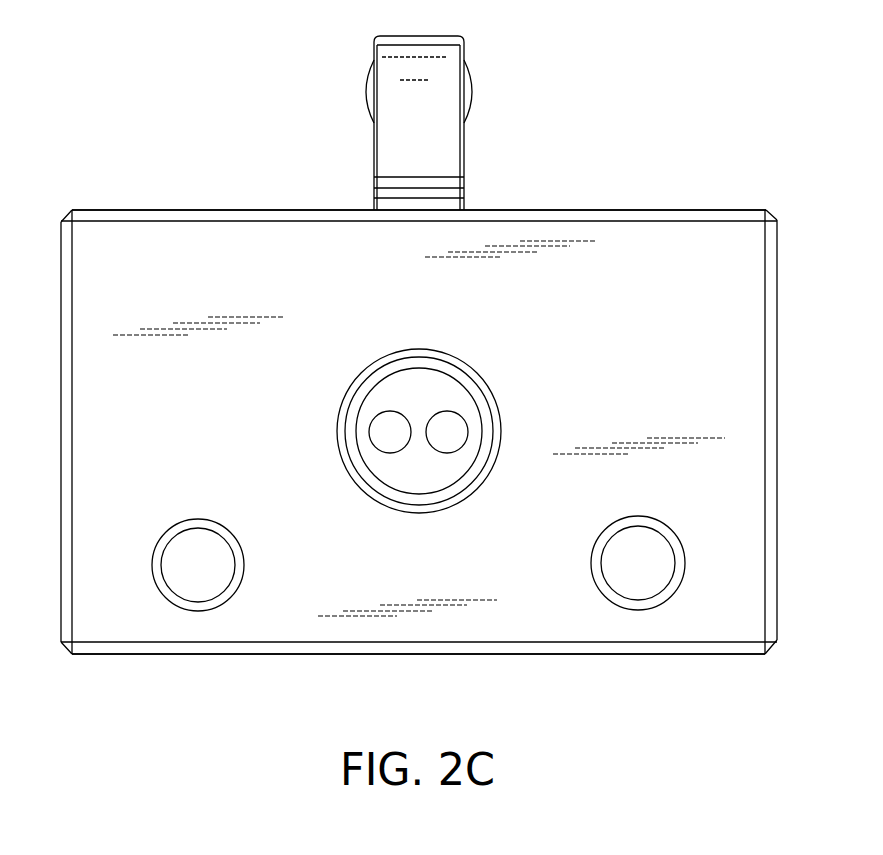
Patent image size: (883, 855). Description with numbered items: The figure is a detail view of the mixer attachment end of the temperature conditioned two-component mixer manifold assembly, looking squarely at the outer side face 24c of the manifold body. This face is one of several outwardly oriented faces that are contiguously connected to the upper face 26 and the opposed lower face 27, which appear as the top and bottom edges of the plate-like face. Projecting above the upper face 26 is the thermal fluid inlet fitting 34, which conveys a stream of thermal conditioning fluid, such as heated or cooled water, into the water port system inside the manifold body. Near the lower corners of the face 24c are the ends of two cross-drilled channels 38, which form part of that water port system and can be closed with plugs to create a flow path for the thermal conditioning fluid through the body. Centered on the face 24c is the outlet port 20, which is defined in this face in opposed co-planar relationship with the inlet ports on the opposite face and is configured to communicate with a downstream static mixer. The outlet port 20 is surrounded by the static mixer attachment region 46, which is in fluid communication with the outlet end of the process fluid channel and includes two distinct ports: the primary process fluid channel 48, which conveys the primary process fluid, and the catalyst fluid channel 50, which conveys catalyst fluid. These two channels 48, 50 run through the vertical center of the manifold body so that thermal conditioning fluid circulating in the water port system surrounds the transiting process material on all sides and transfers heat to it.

The outlet port 20 is at (503, 426).
The outer side face 24c is at (690, 362).
The upper face 26 is at (680, 209).
The lower face 27 is at (700, 655).
The thermal fluid inlet fitting 34 is at (476, 91).
The cross-drilled channels 38 is at (198, 566).
The static mixer attachment region 46 is at (474, 390).
The primary process fluid channel 48 is at (387, 436).
The catalyst fluid channel 50 is at (450, 436).